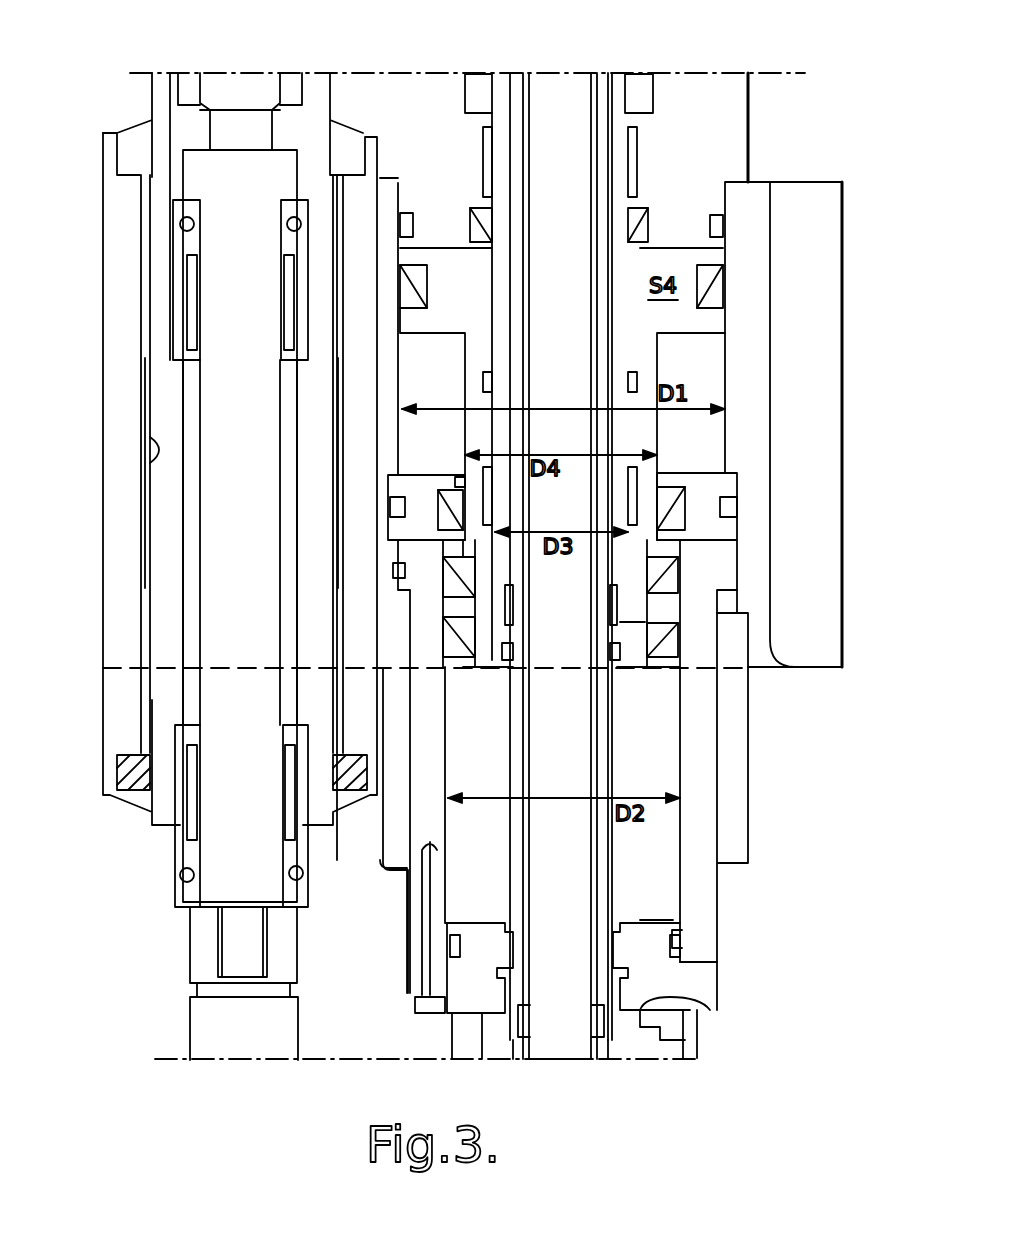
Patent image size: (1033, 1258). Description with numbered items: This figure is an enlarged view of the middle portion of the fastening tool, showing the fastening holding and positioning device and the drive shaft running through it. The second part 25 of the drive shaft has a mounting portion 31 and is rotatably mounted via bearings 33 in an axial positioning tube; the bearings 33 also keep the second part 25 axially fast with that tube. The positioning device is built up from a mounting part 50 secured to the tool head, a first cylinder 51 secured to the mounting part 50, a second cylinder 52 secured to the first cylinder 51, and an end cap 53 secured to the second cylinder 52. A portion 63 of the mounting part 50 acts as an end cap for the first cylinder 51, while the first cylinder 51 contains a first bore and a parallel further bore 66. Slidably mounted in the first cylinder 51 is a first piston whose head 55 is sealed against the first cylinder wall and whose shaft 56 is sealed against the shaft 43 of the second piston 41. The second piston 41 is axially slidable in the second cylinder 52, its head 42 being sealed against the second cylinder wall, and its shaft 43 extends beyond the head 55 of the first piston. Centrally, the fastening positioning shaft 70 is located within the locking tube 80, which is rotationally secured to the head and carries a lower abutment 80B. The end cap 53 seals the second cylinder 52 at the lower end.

The second part 25 is at (212, 403).
The mounting portion 31 is at (207, 583).
The bearings 33 is at (180, 246).
The second piston 41 is at (680, 607).
The head 42 is at (660, 608).
The shaft 43 is at (615, 103).
The mounting part 50 is at (730, 133).
The first cylinder 51 is at (742, 372).
The second cylinder 52 is at (700, 732).
The end cap 53 is at (700, 993).
The head 55 is at (707, 320).
The shaft 56 is at (650, 433).
The portion 63 is at (668, 228).
The further bore 66 is at (152, 465).
The fastening positioning shaft 70 is at (575, 1045).
The locking tube 80 is at (600, 75).
The lower abutment 80B is at (693, 1016).